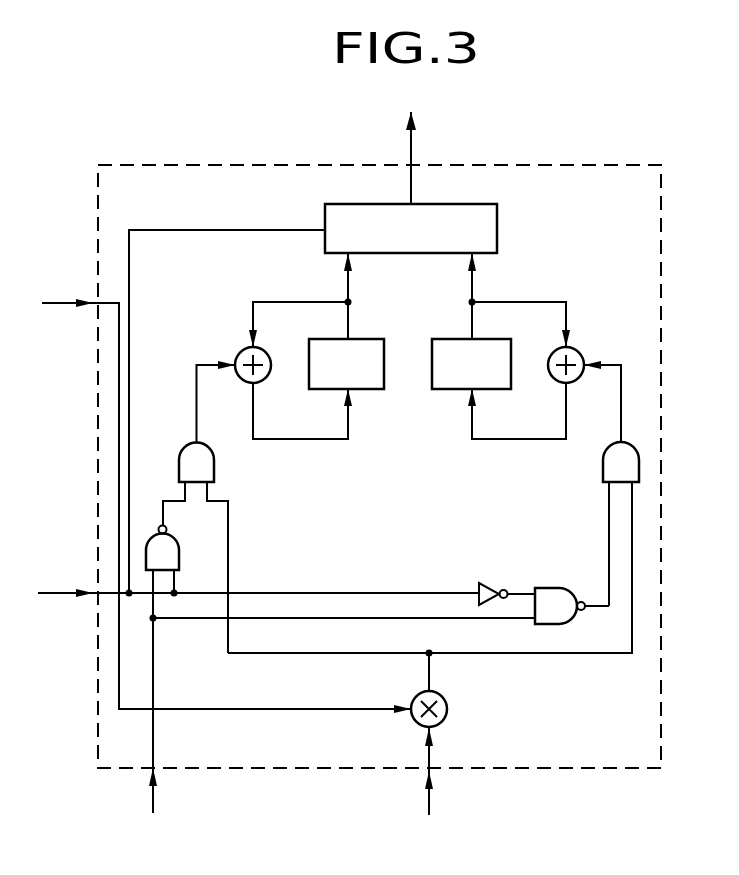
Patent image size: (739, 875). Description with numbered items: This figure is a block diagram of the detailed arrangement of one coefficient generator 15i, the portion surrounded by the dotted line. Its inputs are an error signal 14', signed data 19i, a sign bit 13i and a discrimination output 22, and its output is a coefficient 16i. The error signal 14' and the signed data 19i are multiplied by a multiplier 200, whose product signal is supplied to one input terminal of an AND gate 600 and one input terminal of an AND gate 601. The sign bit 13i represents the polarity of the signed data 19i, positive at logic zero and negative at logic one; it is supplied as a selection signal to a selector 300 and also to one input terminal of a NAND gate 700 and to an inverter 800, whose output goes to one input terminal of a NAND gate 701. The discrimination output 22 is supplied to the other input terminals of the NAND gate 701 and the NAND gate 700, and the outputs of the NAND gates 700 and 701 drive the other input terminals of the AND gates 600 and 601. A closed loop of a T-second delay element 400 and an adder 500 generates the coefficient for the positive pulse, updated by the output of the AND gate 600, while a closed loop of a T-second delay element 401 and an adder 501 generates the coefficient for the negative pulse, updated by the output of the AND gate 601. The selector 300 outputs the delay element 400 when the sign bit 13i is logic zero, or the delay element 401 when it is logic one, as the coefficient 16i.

The coefficient generator 15i is at (635, 165).
The coefficient 16i is at (411, 148).
The selector 300 is at (497, 226).
The signed data 19i is at (62, 302).
The sign bit 13i is at (60, 592).
The T-second delay element 400 is at (376, 338).
The T-second delay element 401 is at (446, 338).
The adder 500 is at (241, 351).
The adder 501 is at (580, 352).
The AND gate 600 is at (214, 468).
The AND gate 601 is at (603, 477).
The NAND gate 700 is at (180, 554).
The NAND gate 701 is at (553, 587).
The inverter 800 is at (486, 583).
The multiplier 200 is at (448, 704).
The discrimination output 22 is at (152, 800).
The error signal 14' is at (405, 771).